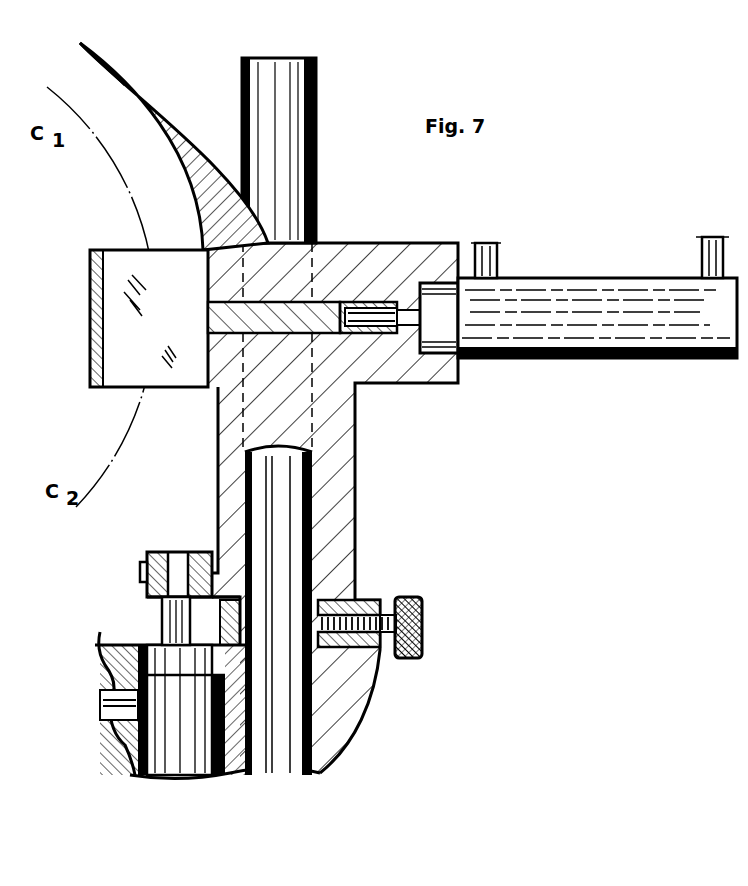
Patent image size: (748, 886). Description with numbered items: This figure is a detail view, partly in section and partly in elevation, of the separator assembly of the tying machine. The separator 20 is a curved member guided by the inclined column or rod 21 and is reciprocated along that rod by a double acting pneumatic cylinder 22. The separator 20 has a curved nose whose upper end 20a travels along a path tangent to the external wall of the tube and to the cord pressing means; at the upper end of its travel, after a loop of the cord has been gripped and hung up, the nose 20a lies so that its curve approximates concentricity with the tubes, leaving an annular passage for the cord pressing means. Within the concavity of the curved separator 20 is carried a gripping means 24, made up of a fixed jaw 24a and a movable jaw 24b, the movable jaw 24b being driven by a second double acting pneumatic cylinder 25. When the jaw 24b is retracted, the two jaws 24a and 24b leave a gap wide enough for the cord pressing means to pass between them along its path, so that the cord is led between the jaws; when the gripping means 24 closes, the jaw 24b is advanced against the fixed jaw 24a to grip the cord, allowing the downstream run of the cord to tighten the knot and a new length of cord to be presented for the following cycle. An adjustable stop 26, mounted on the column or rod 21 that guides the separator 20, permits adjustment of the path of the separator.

The separator 20 is at (174, 146).
The upper end of the curved nose 20a is at (85, 43).
The column or rod 21 is at (316, 128).
The double acting pneumatic cylinder 22 is at (152, 735).
The gripping means 24 is at (126, 341).
The fixed jaw 24a is at (92, 322).
The movable jaw 24b is at (220, 327).
The double acting pneumatic cylinder 25 is at (590, 360).
The adjustable stop 26 is at (374, 602).